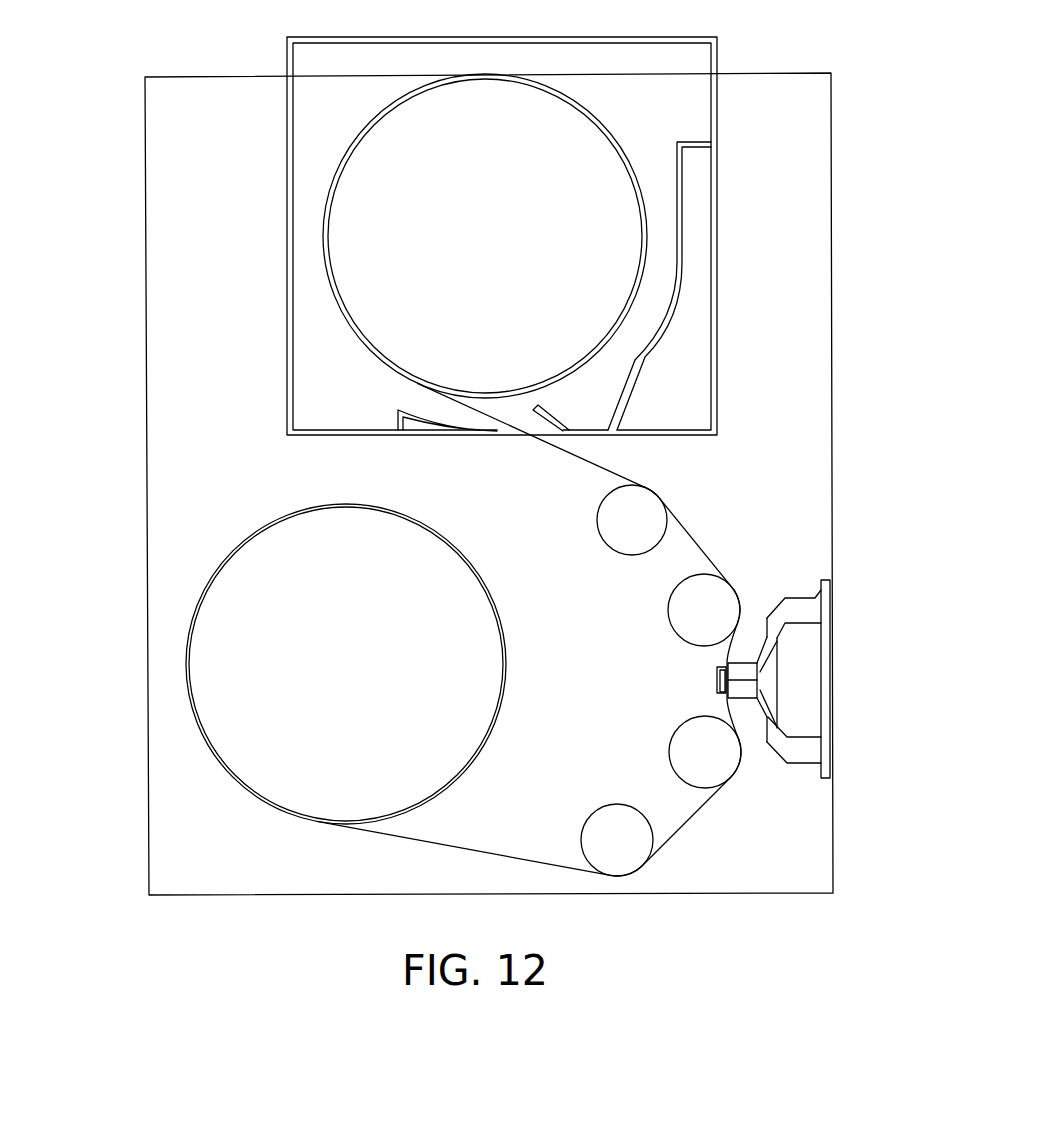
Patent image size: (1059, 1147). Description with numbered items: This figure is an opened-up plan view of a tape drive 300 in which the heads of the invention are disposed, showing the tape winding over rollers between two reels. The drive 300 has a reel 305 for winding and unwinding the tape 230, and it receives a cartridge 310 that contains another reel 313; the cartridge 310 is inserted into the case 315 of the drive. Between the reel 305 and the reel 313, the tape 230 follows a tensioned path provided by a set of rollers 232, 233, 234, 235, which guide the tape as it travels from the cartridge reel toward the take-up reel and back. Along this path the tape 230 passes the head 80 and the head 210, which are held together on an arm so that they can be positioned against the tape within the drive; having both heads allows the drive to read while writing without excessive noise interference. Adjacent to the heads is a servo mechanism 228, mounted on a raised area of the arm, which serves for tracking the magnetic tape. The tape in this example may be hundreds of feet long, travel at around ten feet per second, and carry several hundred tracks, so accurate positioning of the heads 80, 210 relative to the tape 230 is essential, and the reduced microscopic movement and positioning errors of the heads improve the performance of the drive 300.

The drive 300 is at (102, 107).
The case 315 is at (831, 432).
The cartridge 310 is at (293, 325).
The reel 313 is at (330, 236).
The reel 305 is at (237, 558).
The tape 230 is at (577, 457).
The roller 235 is at (615, 553).
The roller 234 is at (670, 622).
The roller 233 is at (675, 730).
The roller 232 is at (607, 805).
The servo mechanism 228 is at (718, 683).
The head 210 is at (742, 665).
The tape-head assembly 80 is at (741, 700).